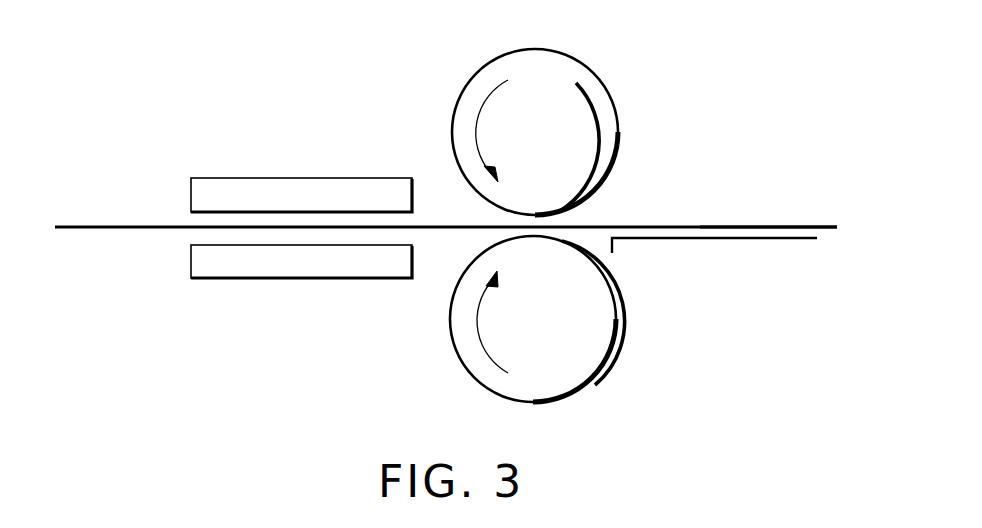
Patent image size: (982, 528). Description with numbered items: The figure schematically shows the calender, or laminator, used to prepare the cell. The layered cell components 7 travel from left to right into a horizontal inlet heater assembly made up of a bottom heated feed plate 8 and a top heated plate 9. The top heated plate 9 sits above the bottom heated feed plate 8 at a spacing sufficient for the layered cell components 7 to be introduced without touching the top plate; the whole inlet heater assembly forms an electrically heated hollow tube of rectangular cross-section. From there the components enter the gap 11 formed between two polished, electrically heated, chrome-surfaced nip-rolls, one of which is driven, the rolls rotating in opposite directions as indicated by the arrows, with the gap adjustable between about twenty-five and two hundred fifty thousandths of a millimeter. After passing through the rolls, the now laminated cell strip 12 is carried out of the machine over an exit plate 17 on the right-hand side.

The layered cell components 7 is at (122, 227).
The bottom heated feed plate 8 is at (192, 246).
The top heated plate 9 is at (278, 188).
The gap 11 is at (583, 214).
The laminated cell strip 12 is at (780, 222).
The exit plate 17 is at (780, 242).